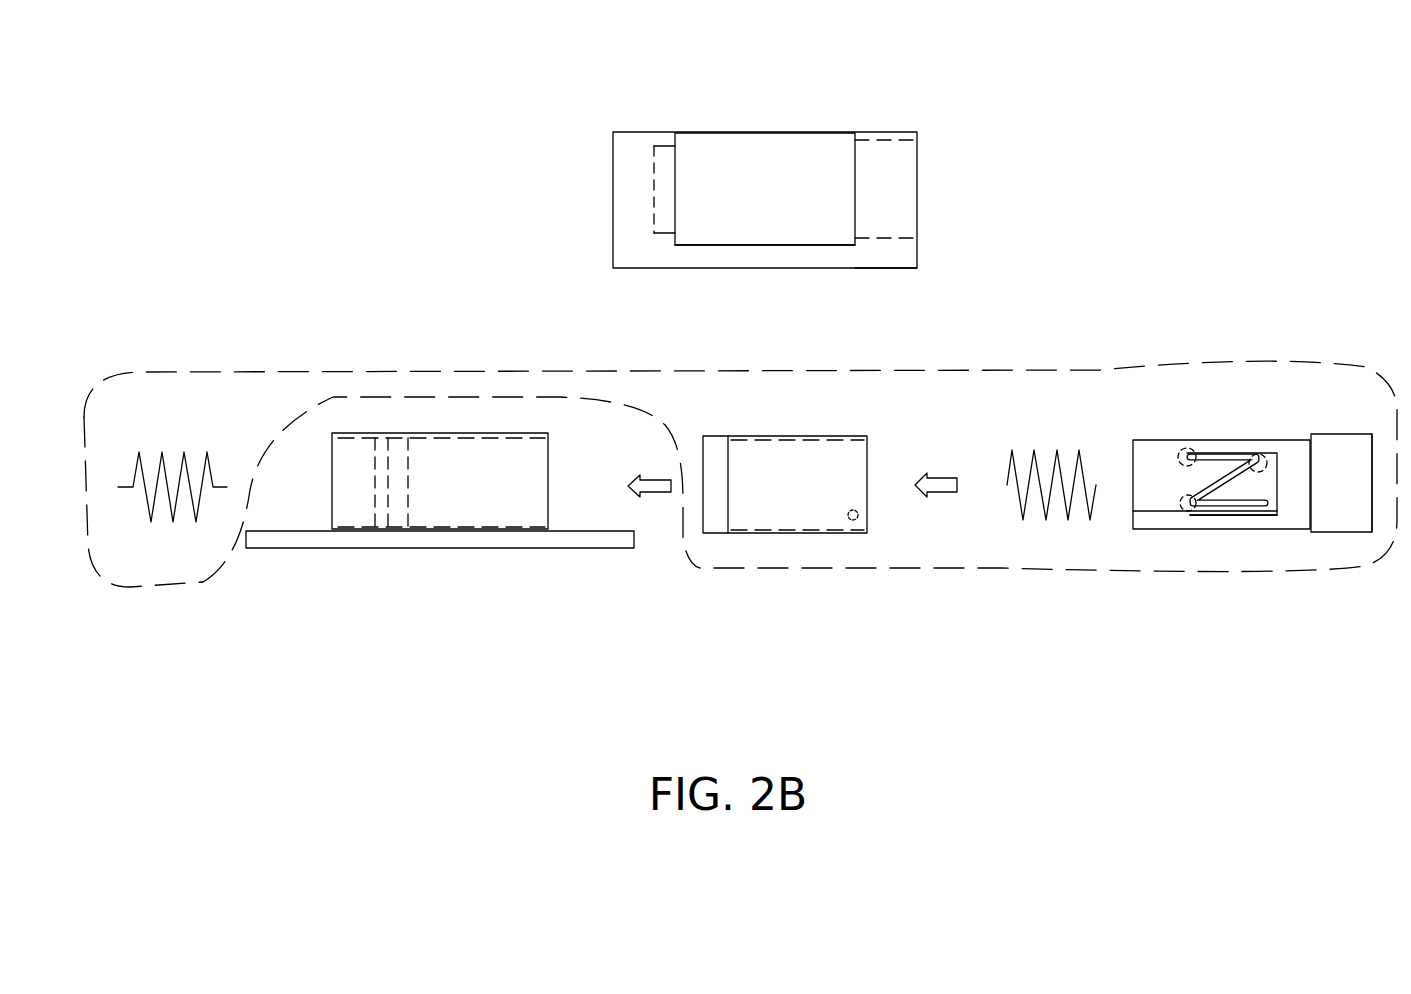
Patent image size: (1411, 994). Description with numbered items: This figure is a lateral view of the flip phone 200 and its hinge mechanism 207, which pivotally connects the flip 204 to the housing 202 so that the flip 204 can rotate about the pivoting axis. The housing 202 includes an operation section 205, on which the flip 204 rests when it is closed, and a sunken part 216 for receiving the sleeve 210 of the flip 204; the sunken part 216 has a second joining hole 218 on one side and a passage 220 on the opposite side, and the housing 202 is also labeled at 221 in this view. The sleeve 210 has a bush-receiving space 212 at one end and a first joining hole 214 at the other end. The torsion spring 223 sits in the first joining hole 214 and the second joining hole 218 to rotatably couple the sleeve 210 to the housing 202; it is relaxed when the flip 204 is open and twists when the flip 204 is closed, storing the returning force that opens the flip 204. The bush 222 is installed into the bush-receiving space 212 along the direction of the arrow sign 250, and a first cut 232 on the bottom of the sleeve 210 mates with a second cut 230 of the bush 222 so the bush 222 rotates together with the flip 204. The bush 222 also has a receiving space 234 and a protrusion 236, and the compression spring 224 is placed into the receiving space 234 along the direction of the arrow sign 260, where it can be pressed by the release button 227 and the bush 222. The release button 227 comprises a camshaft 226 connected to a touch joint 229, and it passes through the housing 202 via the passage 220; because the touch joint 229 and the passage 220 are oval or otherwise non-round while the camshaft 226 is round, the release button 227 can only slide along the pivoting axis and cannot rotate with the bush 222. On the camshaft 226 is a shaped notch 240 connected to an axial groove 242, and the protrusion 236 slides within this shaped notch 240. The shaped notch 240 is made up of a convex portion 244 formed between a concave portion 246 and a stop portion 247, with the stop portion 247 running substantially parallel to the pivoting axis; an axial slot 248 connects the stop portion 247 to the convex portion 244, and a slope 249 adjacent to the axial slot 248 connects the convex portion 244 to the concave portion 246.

The flip phone 200 is at (1118, 82).
The housing 202 is at (860, 125).
The operation section 205 is at (746, 131).
The hinge mechanism 207 is at (528, 367).
The sunken part 216 is at (773, 217).
The second joining hole 218 is at (668, 160).
The passage 220 is at (893, 173).
The housing bottom wall 221 is at (920, 250).
The torsion spring 223 is at (182, 465).
The flip 204 is at (440, 550).
The sleeve 210 is at (548, 497).
The bush-receiving space 212 is at (507, 510).
The first joining hole 214 is at (355, 510).
The first cut 232 is at (400, 508).
The arrow sign 250 is at (653, 487).
The bush 222 is at (768, 533).
The second cut 230 is at (717, 520).
The receiving space 234 is at (812, 510).
The protrusion 236 is at (853, 521).
The arrow sign 260 is at (938, 486).
The compression spring 224 is at (1028, 500).
The camshaft 226 is at (1292, 515).
The release button 227 is at (1337, 534).
The touch joint 229 is at (1355, 520).
The shaped notch 240 is at (1264, 491).
The axial groove 242 is at (1153, 514).
The convex portion 244 is at (1257, 453).
The concave portion 246 is at (1183, 512).
The stop portion 247 is at (1187, 447).
The axial slot 248 is at (1217, 452).
The slope 249 is at (1230, 490).